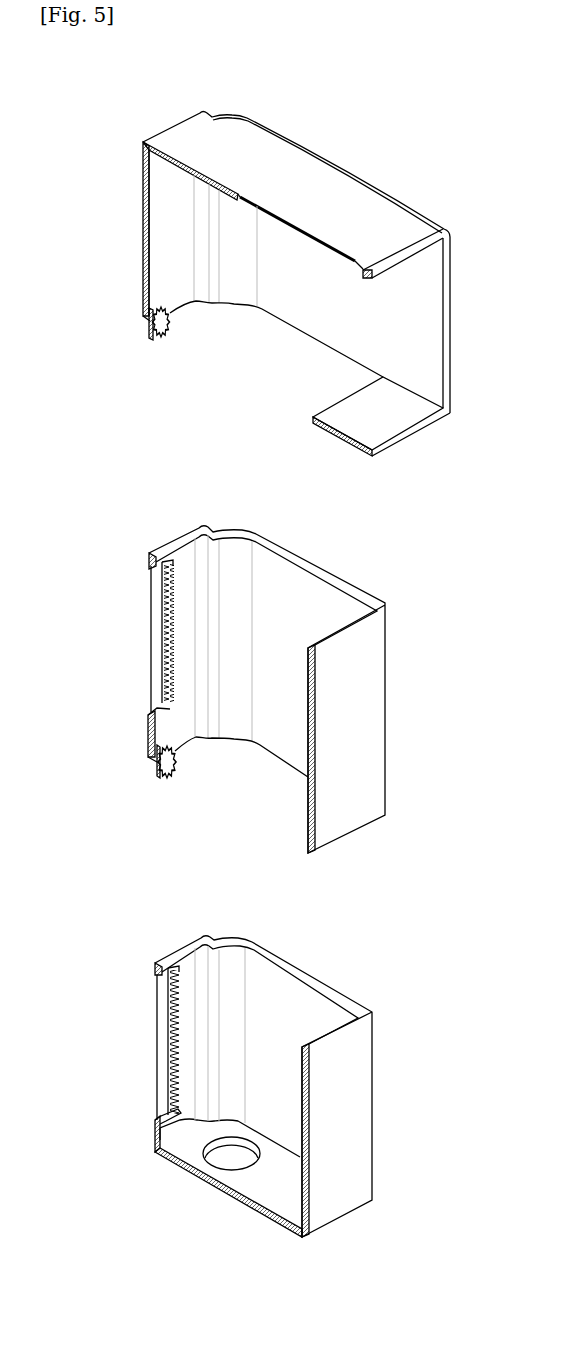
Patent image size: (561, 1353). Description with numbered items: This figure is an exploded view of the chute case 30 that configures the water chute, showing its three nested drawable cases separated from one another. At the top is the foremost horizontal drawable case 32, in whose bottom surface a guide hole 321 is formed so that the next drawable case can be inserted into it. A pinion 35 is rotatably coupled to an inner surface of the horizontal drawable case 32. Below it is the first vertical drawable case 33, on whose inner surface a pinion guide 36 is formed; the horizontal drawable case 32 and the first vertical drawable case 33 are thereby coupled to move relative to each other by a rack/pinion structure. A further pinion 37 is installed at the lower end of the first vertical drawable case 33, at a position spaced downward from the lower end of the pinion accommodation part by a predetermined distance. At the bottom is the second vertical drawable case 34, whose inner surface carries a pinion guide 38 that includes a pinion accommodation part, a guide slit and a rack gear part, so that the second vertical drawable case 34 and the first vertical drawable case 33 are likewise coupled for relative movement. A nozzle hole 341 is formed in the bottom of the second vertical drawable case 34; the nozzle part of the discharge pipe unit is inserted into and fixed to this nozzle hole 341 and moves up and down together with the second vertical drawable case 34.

The bracket assembly 30 is at (371, 108).
The horizontal drawable case 32 is at (403, 226).
The guide hole 321 is at (265, 372).
The pinion 35 is at (150, 324).
The first vertical drawable case 33 is at (368, 725).
The pinion guide 36 is at (150, 637).
The pinion 37 is at (150, 766).
The second vertical drawable case 34 is at (360, 1117).
The pinion guide 38 is at (162, 1048).
The nozzle hole 341 is at (242, 1171).